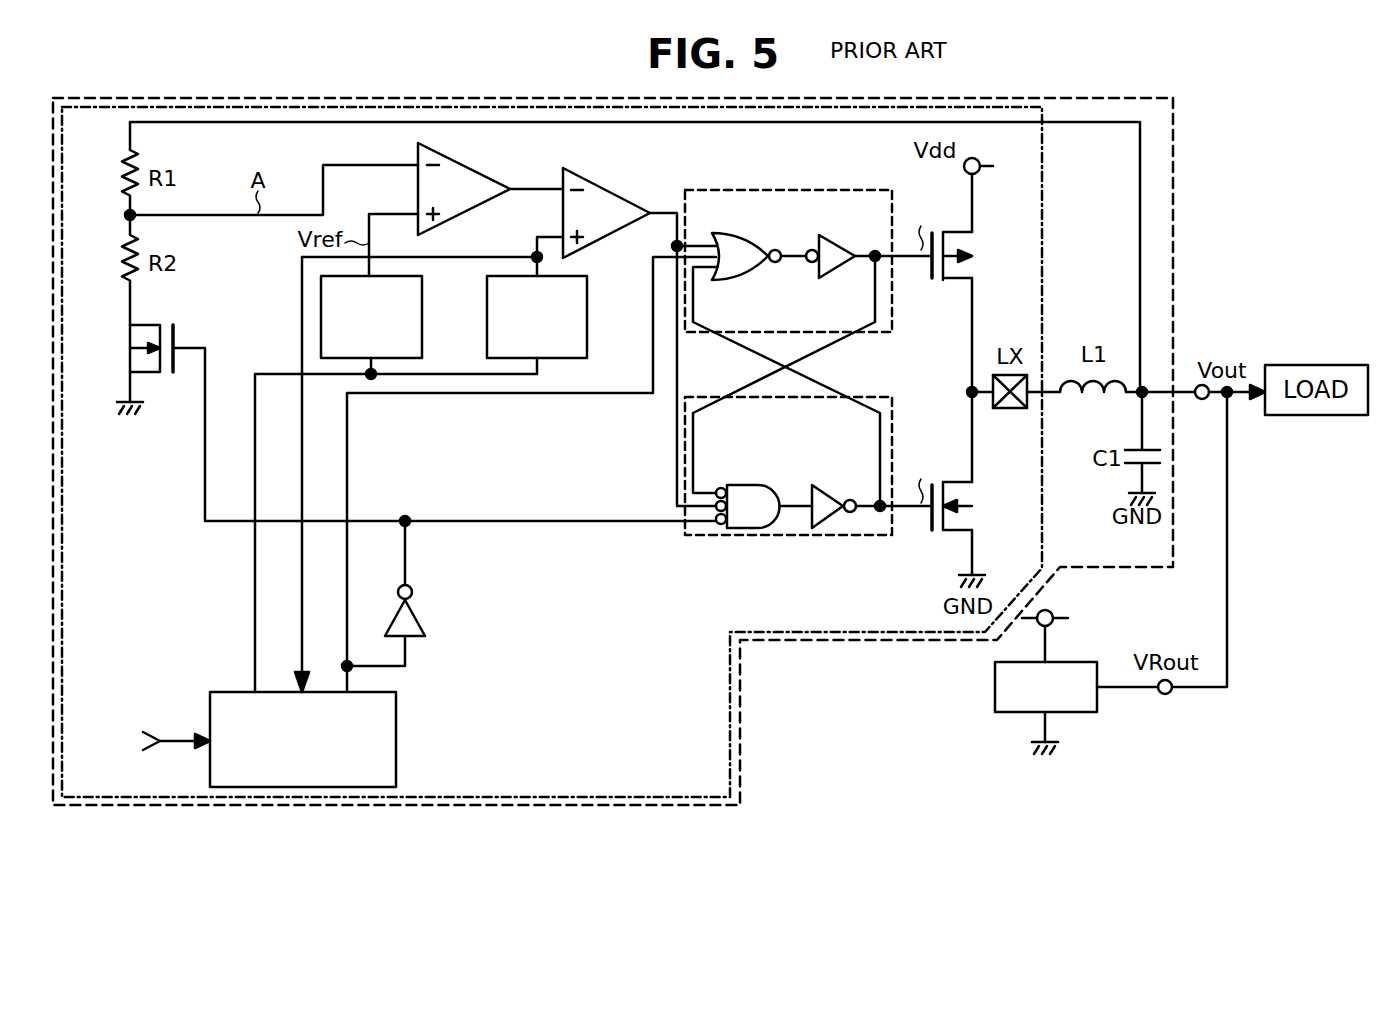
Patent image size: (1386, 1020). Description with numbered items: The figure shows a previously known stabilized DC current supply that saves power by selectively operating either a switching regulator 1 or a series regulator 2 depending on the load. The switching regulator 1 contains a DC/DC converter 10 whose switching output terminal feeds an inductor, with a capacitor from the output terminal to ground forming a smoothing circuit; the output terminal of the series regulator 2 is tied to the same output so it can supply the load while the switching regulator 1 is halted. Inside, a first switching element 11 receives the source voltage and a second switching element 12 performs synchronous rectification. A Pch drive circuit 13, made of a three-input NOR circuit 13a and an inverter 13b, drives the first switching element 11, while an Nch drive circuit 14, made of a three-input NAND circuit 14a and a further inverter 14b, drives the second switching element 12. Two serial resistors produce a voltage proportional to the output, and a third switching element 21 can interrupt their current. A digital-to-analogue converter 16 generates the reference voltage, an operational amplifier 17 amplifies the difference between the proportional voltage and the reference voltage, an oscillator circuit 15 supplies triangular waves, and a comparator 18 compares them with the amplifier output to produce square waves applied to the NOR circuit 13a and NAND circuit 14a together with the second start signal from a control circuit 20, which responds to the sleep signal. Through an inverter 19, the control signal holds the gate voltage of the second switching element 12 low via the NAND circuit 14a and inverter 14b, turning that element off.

The switching regulator 1 is at (1103, 97).
The series regulator 2 is at (995, 687).
The DC/DC converter 10 is at (838, 643).
The first switching element 11 is at (942, 292).
The second switching element 12 is at (928, 552).
The Pch drive circuit 13 is at (788, 236).
The three-input NOR circuit 13a is at (733, 283).
The inverter 13b is at (837, 280).
The Nch drive circuit 14 is at (788, 498).
The three-input NAND circuit 14a is at (740, 535).
The inverter 14b is at (832, 532).
The oscillator circuit 15 is at (589, 313).
The digital-to-analogue converter 16 is at (424, 313).
The operational amplifier 17 is at (490, 172).
The comparator 18 is at (635, 198).
The inverter 19 is at (418, 640).
The control circuit 20 is at (398, 742).
The third switching element 21 is at (171, 387).